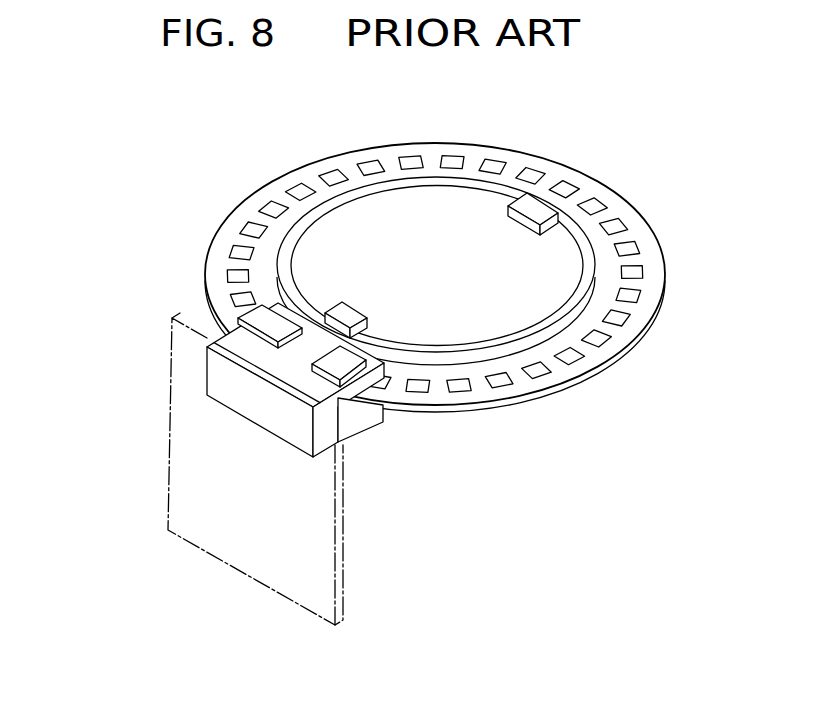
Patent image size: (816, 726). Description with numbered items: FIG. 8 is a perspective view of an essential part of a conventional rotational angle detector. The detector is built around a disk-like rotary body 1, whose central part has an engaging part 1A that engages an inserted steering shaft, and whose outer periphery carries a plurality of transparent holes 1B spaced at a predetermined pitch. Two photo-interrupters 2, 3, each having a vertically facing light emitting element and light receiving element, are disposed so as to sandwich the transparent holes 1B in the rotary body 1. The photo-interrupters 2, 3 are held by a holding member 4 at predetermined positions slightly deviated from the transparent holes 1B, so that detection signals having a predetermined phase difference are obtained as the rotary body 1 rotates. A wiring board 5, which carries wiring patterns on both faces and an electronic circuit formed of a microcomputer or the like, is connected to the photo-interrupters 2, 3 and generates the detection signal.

The rotary body 1 is at (435, 247).
The engaging part 1A is at (522, 218).
The transparent holes 1B is at (608, 208).
The photo-interrupter 2 is at (340, 362).
The photo-interrupter 3 is at (257, 333).
The holding member 4 is at (373, 415).
The wiring board 5 is at (195, 448).